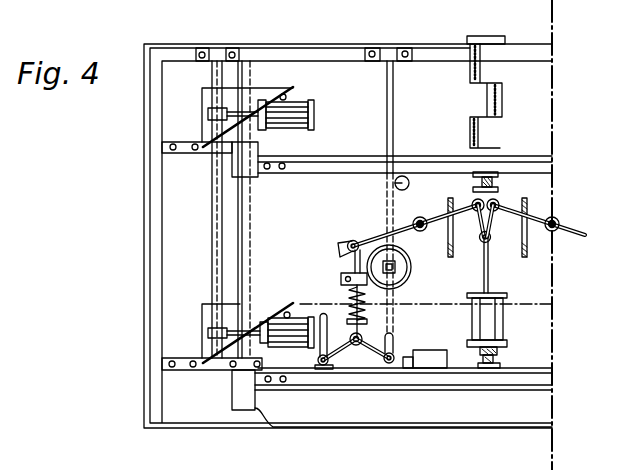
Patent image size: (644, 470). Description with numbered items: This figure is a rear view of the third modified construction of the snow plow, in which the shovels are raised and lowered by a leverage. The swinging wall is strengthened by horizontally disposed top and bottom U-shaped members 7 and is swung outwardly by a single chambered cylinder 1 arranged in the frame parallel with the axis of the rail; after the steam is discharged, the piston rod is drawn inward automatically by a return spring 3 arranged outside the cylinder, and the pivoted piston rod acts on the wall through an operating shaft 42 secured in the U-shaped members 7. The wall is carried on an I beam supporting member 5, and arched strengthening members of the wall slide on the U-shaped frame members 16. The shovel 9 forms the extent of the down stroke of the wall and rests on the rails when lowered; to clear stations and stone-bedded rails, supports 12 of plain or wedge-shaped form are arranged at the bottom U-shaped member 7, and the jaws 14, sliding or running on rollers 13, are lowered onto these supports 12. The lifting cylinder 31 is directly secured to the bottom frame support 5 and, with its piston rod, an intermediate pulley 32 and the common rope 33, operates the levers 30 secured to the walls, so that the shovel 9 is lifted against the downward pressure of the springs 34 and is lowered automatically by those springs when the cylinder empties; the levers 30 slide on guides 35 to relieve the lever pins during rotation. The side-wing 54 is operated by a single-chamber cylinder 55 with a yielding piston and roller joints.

The single chambered cylinder 1 is at (411, 268).
The return spring 3 is at (394, 183).
The I beam supporting member 5 is at (497, 172).
The U-shaped member 7 is at (341, 55).
The shovel 9 is at (412, 418).
The support 12 is at (331, 378).
The roller 13 is at (318, 360).
The jaw 14 is at (352, 334).
The U-shaped frame member 16 is at (334, 158).
The lever 30 is at (418, 221).
The lifting cylinder 31 is at (498, 322).
The intermediate pulley 32 is at (482, 241).
The common rope 33 is at (491, 227).
The spring 34 is at (372, 321).
The guide 35 is at (449, 200).
The operating shaft 42 is at (394, 122).
The side-wing 54 is at (199, 421).
The single-chamber cylinder 55 is at (311, 117).